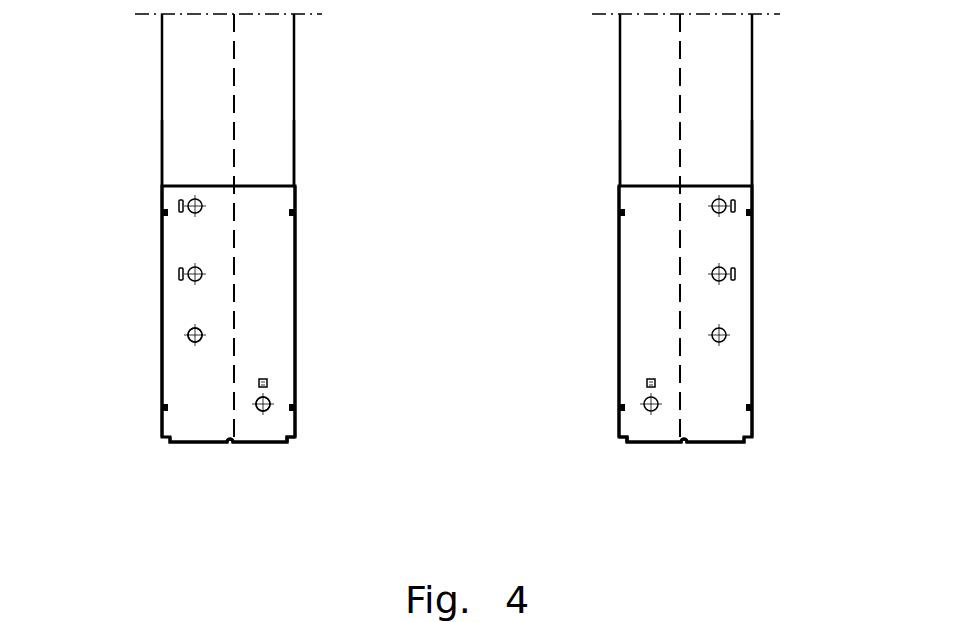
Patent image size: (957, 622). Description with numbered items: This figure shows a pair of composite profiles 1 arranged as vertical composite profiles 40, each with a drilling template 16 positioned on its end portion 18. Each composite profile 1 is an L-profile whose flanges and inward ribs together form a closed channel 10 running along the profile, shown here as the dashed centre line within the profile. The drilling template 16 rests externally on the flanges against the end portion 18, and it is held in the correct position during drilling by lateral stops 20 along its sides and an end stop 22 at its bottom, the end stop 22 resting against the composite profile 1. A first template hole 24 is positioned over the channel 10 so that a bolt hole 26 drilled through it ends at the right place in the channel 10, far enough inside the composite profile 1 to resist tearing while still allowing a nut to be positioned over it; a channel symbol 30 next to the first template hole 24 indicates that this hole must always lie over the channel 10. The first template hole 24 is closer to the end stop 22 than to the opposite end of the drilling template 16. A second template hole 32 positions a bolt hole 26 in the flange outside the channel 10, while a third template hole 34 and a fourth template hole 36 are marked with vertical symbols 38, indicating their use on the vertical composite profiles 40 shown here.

The composite profile 1 is at (568, 67).
The channel 10 is at (280, 147).
The drilling template 16 is at (272, 298).
The end portion 18 is at (296, 449).
The lateral stop 20 is at (161, 192).
The end stop 22 is at (255, 441).
The first template hole 24 is at (270, 404).
The bolt hole 26 is at (191, 339).
The channel symbol 30 is at (268, 381).
The second template hole 32 is at (190, 331).
The third template hole 34 is at (183, 282).
The fourth template hole 36 is at (183, 199).
The vertical symbol 38 is at (183, 210).
The vertical composite profile 40 is at (182, 165).